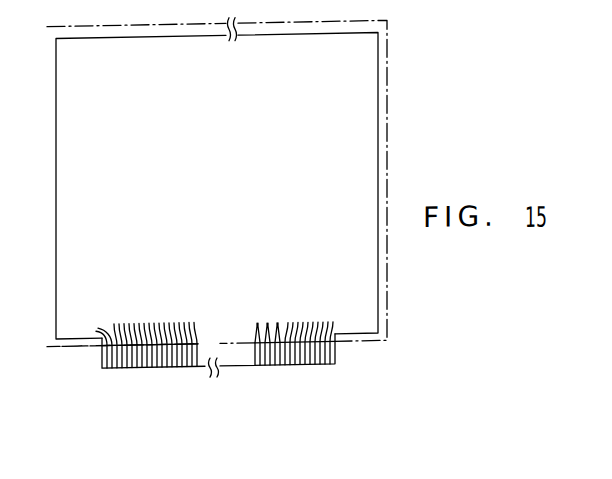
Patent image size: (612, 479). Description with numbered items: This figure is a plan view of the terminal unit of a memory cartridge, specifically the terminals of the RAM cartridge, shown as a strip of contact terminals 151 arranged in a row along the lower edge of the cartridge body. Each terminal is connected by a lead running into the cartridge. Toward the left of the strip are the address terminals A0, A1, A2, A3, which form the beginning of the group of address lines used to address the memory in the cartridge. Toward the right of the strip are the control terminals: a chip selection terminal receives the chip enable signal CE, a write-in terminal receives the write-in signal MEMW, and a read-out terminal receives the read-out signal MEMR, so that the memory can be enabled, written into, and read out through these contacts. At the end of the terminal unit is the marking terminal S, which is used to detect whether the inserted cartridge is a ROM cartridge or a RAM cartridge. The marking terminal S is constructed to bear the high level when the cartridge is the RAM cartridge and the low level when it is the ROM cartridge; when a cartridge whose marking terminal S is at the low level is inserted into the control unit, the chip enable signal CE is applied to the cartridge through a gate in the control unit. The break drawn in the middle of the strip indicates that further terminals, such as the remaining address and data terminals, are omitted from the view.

The memory module connector 151 is at (252, 387).
The address line A0 is at (112, 371).
The address line A1 is at (127, 372).
The address line A2 is at (142, 372).
The address line A3 is at (153, 372).
The chip enable signal CE is at (285, 374).
The write-in signal MEMW is at (298, 370).
The marking terminal S is at (312, 368).
The read-out signal MEMR is at (323, 368).